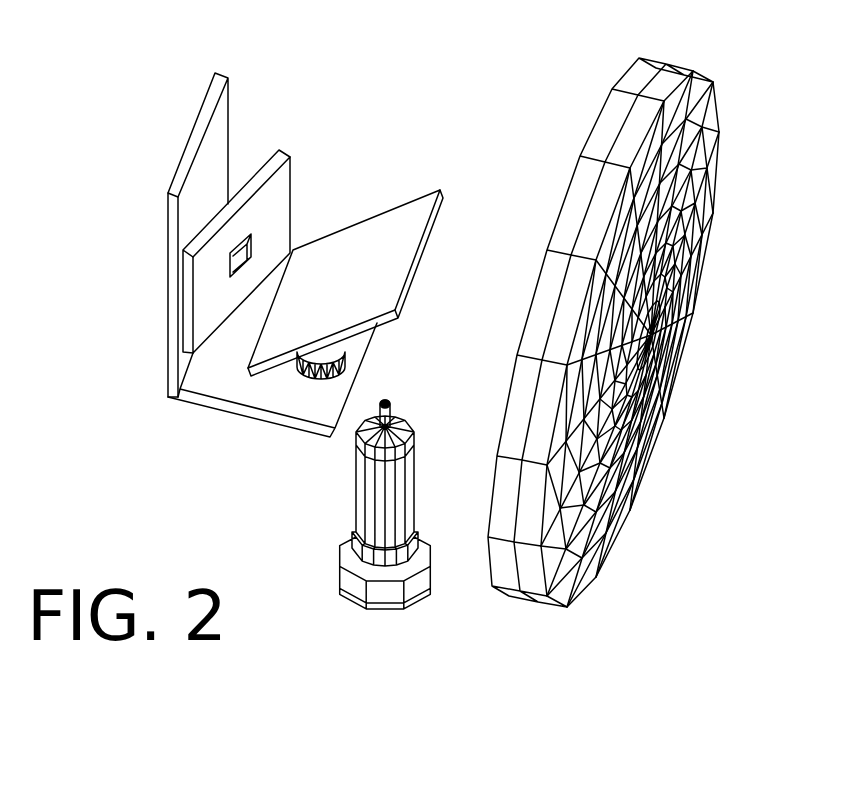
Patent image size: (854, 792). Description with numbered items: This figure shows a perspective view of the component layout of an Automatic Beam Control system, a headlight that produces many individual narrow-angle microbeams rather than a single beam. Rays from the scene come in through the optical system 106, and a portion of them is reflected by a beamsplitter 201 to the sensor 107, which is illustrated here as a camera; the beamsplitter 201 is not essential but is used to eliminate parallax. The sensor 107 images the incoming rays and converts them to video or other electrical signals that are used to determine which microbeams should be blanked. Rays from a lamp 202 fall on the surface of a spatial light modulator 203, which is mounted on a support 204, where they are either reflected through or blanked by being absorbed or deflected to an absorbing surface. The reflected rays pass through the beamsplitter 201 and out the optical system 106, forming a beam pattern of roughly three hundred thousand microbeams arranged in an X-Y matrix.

The optical system 106 is at (665, 62).
The sensor 107 is at (313, 379).
The beamsplitter 201 is at (391, 208).
The lamp 202 is at (408, 613).
The spatial light modulator 203 is at (262, 158).
The support 204 is at (169, 189).